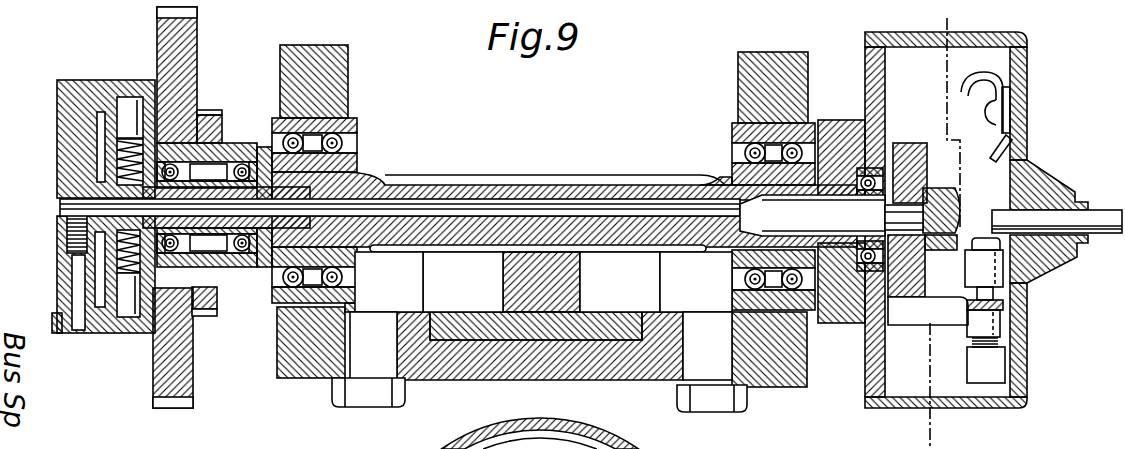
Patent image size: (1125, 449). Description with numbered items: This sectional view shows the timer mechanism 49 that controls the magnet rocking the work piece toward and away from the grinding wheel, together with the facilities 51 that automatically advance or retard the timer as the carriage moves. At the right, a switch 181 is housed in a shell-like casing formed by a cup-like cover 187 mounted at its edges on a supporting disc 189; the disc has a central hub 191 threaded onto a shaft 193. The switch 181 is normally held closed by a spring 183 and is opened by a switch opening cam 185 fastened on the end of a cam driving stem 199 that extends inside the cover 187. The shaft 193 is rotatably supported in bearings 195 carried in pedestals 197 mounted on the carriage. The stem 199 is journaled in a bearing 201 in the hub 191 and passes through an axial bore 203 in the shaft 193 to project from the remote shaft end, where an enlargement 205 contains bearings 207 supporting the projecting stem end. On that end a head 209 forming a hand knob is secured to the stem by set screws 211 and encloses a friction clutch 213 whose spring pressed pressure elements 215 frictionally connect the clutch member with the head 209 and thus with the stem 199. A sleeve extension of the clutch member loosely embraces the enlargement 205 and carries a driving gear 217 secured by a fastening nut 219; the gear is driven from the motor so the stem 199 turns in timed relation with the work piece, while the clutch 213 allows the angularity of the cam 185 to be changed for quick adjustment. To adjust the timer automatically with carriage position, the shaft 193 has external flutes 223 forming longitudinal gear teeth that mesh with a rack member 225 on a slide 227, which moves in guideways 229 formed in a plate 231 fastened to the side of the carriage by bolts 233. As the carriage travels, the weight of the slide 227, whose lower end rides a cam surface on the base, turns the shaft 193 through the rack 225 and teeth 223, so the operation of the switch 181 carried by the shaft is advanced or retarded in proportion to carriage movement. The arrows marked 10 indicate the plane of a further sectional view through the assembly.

The section line 10 is at (919, 23).
The timer mechanism 49 is at (1032, 385).
The timer adjusting facilities 51 is at (414, 168).
The switch 181 is at (1000, 297).
The spring 183 is at (973, 343).
The switch opening cam 185 is at (910, 152).
The cup-like cover 187 is at (1022, 80).
The supporting disc 189 is at (875, 89).
The central hub 191 is at (847, 305).
The shaft 193 is at (720, 181).
The bearings 195 is at (358, 143).
The pedestals 197 is at (348, 82).
The cam driving stem 199 is at (540, 206).
The bearing 201 is at (866, 178).
The axial bore 203 is at (443, 197).
The enlargement 205 is at (242, 147).
The bearings 207 is at (245, 266).
The head 209 is at (82, 128).
The set screws 211 is at (66, 238).
The friction clutch 213 is at (130, 100).
The spring pressed pressure elements 215 is at (130, 108).
The driving gear 217 is at (182, 373).
The fastening nut 219 is at (208, 114).
The external flutes 223 is at (592, 181).
The rack member 225 is at (580, 279).
The slide 227 is at (468, 320).
The guideways 229 is at (433, 332).
The plate 231 is at (535, 382).
The bolts 233 is at (362, 404).